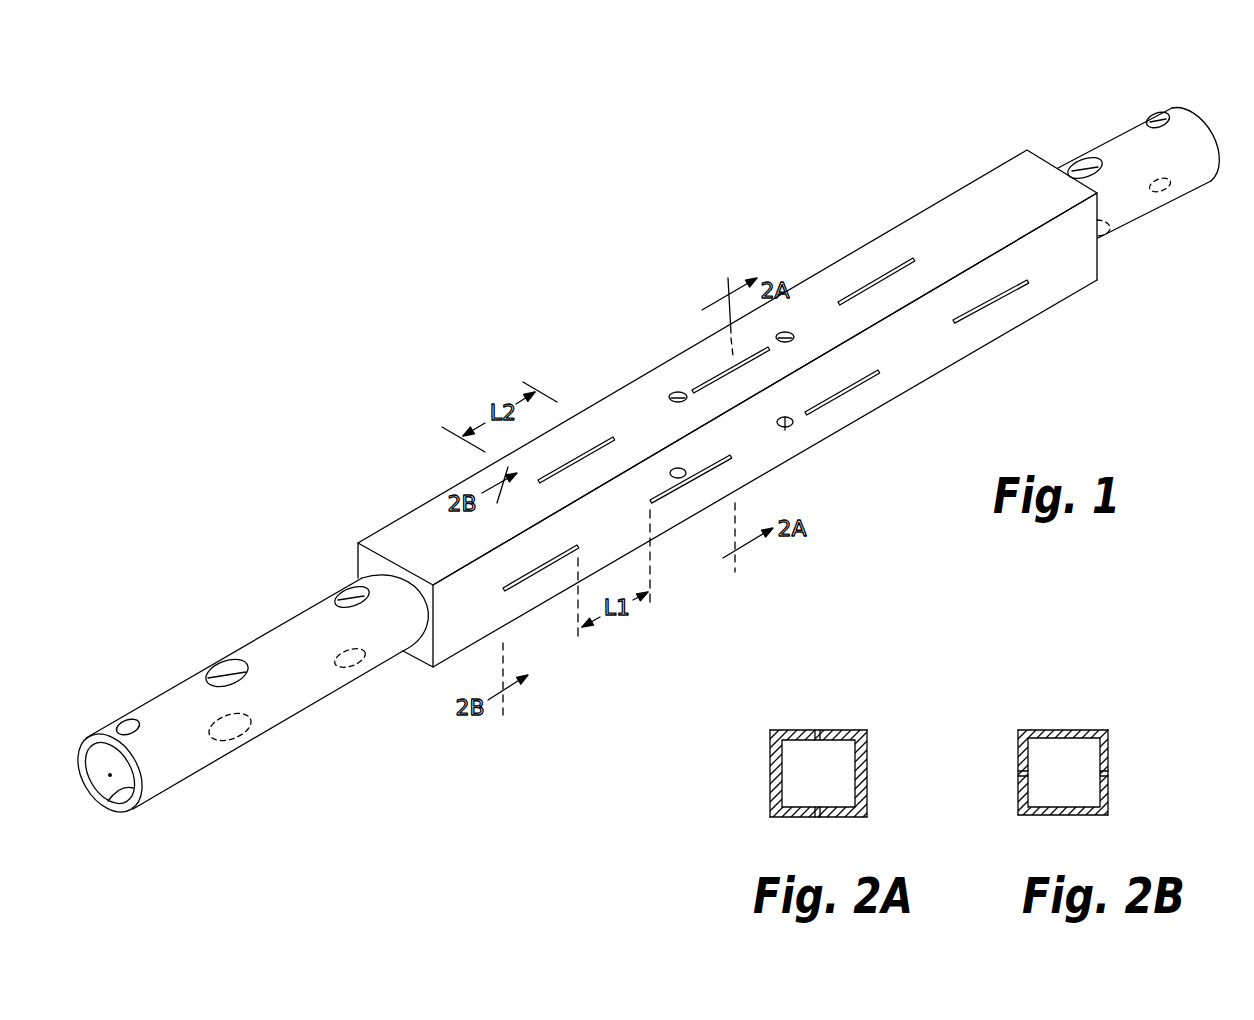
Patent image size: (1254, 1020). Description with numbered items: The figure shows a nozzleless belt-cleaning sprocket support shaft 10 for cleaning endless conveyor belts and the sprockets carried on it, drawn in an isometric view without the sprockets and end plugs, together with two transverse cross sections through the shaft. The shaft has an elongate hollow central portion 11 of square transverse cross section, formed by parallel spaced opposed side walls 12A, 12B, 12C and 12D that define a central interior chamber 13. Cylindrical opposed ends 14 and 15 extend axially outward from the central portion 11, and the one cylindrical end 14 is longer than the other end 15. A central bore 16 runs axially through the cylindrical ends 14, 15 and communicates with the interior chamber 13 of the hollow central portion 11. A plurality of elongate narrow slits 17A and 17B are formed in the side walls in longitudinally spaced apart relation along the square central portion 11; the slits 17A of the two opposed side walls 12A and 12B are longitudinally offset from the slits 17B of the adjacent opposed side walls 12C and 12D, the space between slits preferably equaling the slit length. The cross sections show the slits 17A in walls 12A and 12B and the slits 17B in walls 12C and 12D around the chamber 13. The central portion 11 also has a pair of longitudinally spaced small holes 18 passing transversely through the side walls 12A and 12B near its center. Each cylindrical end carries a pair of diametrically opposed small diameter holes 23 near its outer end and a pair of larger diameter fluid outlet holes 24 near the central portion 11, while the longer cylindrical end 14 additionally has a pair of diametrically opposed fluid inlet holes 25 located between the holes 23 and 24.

In FIG. 1, the nozzleless belt-cleaning sprocket support shaft 10 is at (818, 163).
In FIG. 2A, the nozzleless belt-cleaning sprocket support shaft 10 is at (866, 678).
In FIG. 2B, the nozzleless belt-cleaning sprocket support shaft 10 is at (1089, 674).
In FIG. 1, the central portion 11 is at (886, 384).
In FIG. 2A, the central portion 11 is at (881, 712).
In FIG. 2B, the central portion 11 is at (1117, 704).
In FIG. 1, the side wall 12A is at (418, 515).
In FIG. 2A, the side wall 12A is at (790, 730).
In FIG. 2B, the side wall 12A is at (1035, 730).
In FIG. 1, the side wall 12B is at (418, 667).
In FIG. 2A, the side wall 12B is at (790, 817).
In FIG. 2B, the side wall 12B is at (1045, 815).
In FIG. 1, the side wall 12C is at (357, 553).
In FIG. 2A, the side wall 12C is at (770, 765).
In FIG. 2B, the side wall 12C is at (1018, 752).
In FIG. 1, the side wall 12D is at (833, 422).
In FIG. 2A, the side wall 12D is at (867, 775).
In FIG. 2B, the side wall 12D is at (1108, 790).
In FIG. 2A, the central interior chamber 13 is at (825, 784).
In FIG. 2B, the central interior chamber 13 is at (1067, 787).
In FIG. 1, the cylindrical end 14 is at (203, 771).
In FIG. 1, the cylindrical end 15 is at (1133, 224).
In FIG. 1, the central bore 16 is at (97, 766).
In FIG. 1, the slits 17A is at (864, 288).
In FIG. 2A, the slits 17A is at (817, 730).
In FIG. 1, the slits 17B is at (877, 368).
In FIG. 2B, the slits 17B is at (1018, 774).
In FIG. 1, the small holes 18 is at (785, 336).
In FIG. 1, the small diameter holes 23 is at (125, 722).
In FIG. 1, the fluid outlet holes 24 is at (347, 592).
In FIG. 1, the fluid inlet holes 25 is at (222, 672).